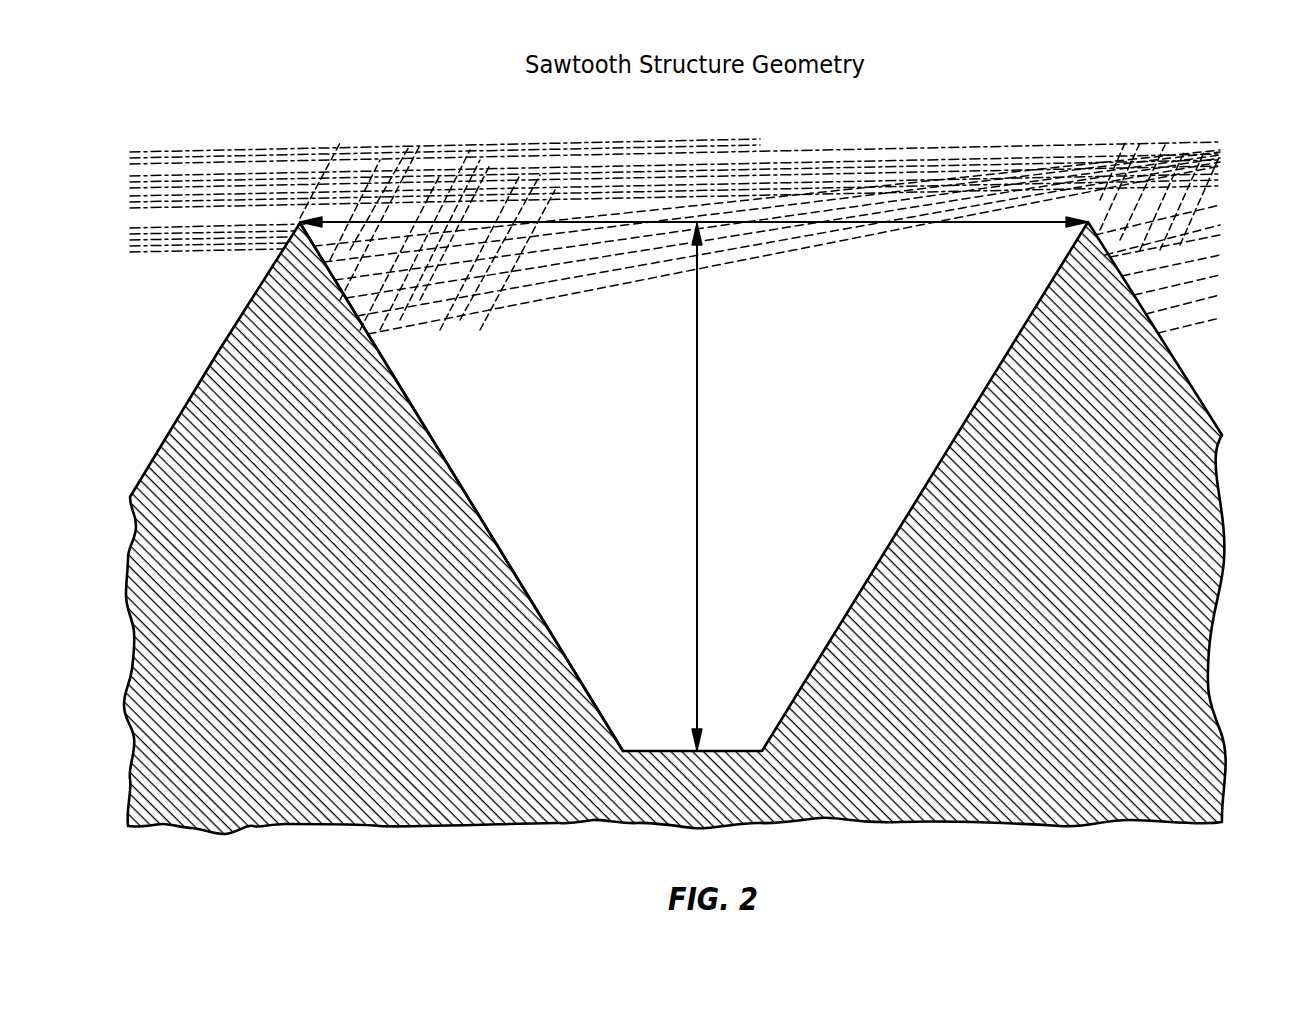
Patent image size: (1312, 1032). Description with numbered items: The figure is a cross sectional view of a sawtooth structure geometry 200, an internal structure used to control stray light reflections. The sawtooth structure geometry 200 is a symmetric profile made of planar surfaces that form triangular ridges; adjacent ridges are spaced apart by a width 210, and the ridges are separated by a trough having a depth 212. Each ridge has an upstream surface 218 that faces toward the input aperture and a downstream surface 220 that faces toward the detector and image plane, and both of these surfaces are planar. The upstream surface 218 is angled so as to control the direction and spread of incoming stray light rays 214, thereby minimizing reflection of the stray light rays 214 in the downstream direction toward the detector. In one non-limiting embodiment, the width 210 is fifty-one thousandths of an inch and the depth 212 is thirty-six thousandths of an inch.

The sawtooth structure geometry 200 is at (376, 88).
The width 210 is at (785, 221).
The depth 212 is at (697, 380).
The stray light rays 214 is at (1228, 143).
The upstream surface 218 is at (477, 510).
The downstream surface 220 is at (217, 358).